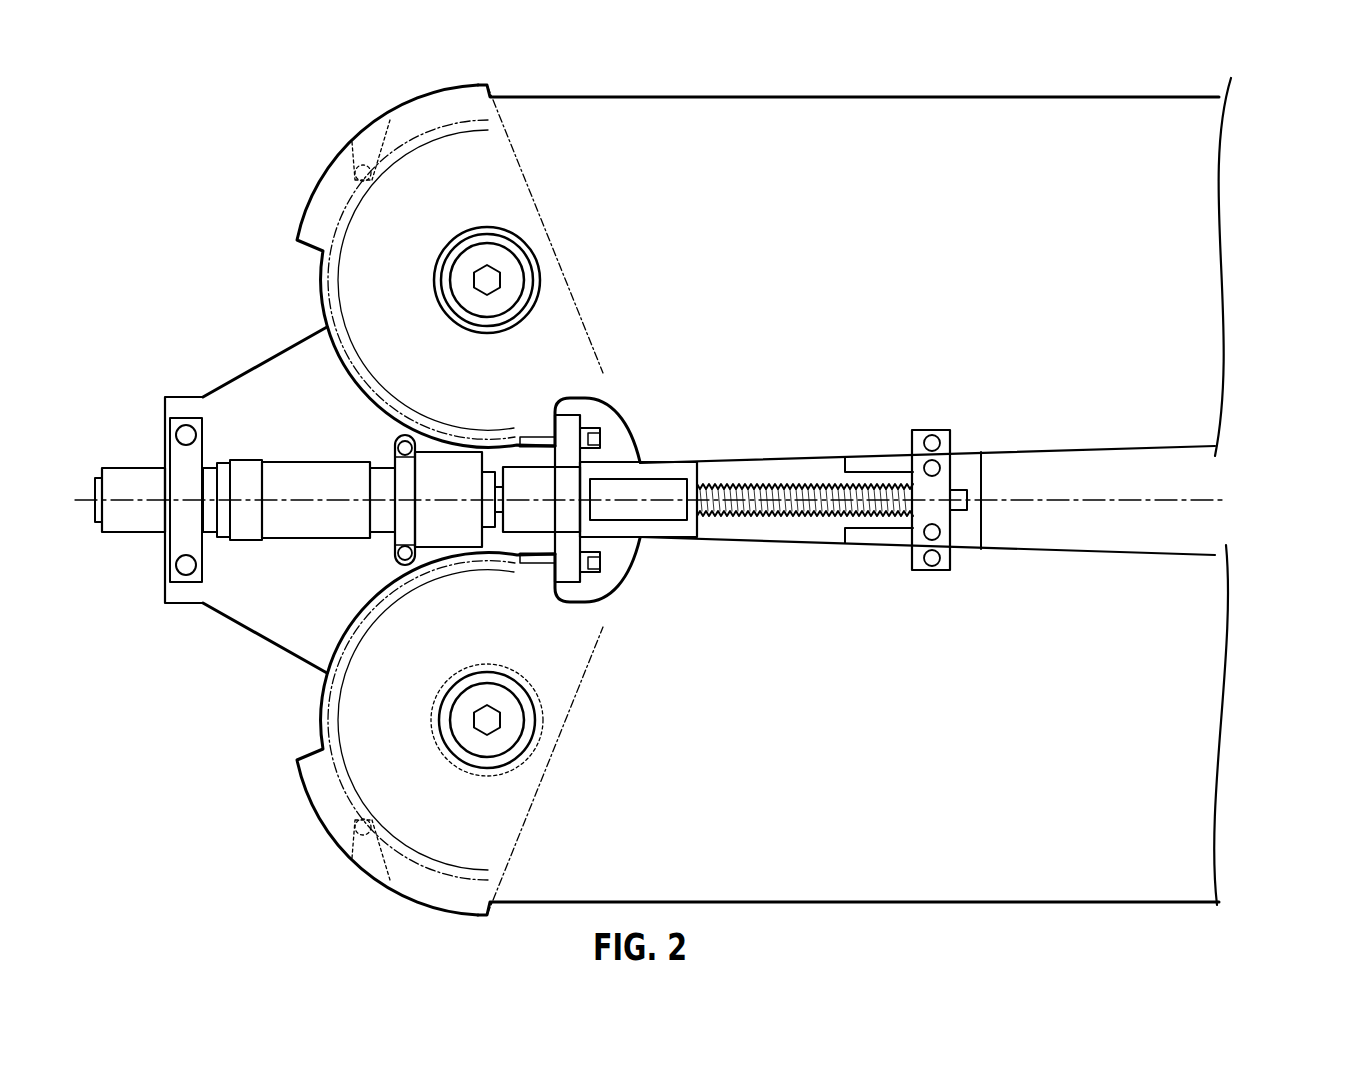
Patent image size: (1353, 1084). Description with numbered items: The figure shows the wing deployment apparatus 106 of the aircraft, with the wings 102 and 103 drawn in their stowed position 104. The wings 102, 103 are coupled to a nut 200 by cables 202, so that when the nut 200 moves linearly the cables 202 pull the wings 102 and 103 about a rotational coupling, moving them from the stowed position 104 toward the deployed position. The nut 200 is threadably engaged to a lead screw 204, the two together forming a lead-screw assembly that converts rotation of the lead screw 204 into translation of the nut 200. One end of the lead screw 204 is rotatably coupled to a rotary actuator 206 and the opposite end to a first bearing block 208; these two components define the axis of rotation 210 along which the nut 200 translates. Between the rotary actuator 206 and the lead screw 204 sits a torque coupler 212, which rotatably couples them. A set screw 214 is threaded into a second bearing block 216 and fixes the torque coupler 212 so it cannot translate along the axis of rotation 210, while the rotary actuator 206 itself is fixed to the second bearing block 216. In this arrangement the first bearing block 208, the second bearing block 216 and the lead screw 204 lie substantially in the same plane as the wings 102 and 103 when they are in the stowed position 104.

The wing 102 is at (940, 124).
The wing 103 is at (940, 874).
The stowed position 104 is at (632, 80).
The wing deployment apparatus 106 is at (281, 290).
The nut 200 is at (583, 583).
The cables 202 is at (560, 468).
The lead screw 204 is at (803, 487).
The rotary actuator 206 is at (330, 463).
The first bearing block 208 is at (950, 513).
The axis of rotation 210 is at (1222, 500).
The torque coupler 212 is at (497, 488).
The set screw 214 is at (480, 513).
The second bearing block 216 is at (433, 475).